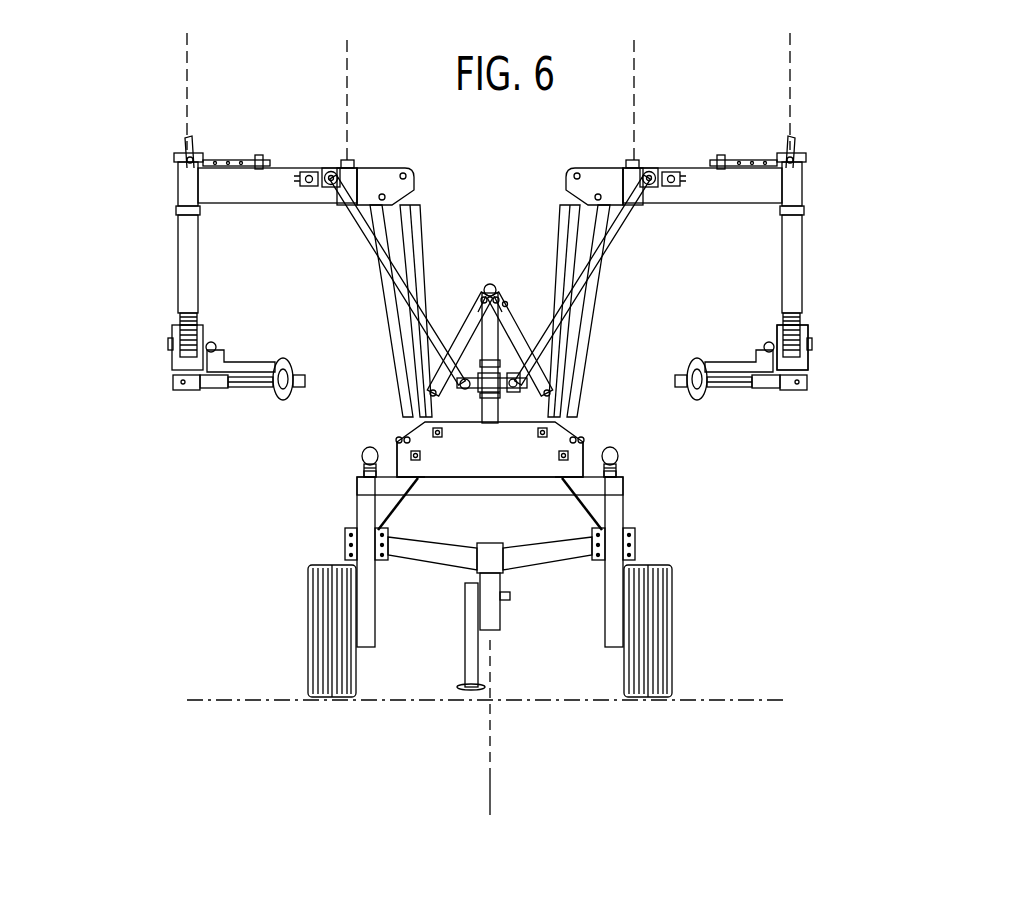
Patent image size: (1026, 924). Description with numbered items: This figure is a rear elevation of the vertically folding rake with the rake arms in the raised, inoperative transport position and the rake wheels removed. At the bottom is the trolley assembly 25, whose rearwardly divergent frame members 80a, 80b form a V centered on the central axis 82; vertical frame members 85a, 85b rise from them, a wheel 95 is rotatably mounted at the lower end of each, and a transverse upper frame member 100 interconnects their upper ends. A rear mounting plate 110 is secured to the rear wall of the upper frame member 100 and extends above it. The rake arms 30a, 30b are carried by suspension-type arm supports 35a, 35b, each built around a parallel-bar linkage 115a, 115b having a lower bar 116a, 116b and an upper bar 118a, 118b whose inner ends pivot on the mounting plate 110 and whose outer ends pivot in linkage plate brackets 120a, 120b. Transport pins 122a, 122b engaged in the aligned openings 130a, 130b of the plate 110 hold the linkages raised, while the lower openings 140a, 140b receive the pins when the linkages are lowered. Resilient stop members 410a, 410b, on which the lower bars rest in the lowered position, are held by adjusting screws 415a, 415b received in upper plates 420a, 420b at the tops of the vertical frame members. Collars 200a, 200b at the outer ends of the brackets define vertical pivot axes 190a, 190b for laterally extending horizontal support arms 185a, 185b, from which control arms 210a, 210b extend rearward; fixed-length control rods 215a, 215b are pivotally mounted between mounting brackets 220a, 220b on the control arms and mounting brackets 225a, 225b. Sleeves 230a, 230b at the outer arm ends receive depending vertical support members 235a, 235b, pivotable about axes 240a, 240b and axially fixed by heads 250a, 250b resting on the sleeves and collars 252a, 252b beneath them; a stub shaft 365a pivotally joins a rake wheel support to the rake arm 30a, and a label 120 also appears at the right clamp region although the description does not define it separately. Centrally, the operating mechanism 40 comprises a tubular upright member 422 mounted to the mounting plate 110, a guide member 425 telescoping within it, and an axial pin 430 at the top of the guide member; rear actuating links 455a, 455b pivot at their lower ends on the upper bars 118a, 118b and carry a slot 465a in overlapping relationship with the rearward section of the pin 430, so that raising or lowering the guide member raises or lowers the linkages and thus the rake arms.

The trolley assembly 25 is at (657, 533).
The rake arm 30a is at (177, 363).
The rake arm 30b is at (807, 372).
The suspension-type arm support 35a is at (235, 112).
The suspension-type arm support 35b is at (740, 72).
The operating mechanism 40 is at (449, 336).
The rearwardly divergent trolley frame member 80a is at (418, 552).
The rearwardly divergent trolley frame member 80b is at (557, 555).
The central axis 82 is at (490, 796).
The vertical frame member 85a is at (380, 632).
The vertical frame member 85b is at (602, 620).
The wheel 95 is at (675, 673).
The transverse upper frame member 100 is at (482, 496).
The rear mounting plate 110 is at (584, 448).
The linkage 115a is at (374, 268).
The linkage 115b is at (610, 268).
The lower bar 116a is at (384, 290).
The lower bar 116b is at (594, 312).
The upper bar 118a is at (428, 268).
The upper bar 118b is at (558, 234).
The clamp body 120 is at (810, 333).
The linkage plate bracket 120a is at (366, 168).
The linkage plate bracket 120b is at (610, 165).
The transport pin 122a is at (427, 478).
The transport pin 122b is at (584, 384).
The opening 130a is at (399, 437).
The opening 130b is at (582, 430).
The opening 140a is at (357, 507).
The opening 140b is at (582, 478).
The horizontal support arm 185a is at (286, 166).
The horizontal support arm 185b is at (700, 163).
The vertical pivot axis 190a is at (349, 94).
The vertical pivot axis 190b is at (635, 83).
The collar 200a is at (363, 183).
The collar 200b is at (620, 178).
The control arm 210a is at (305, 185).
The control arm 210b is at (667, 188).
The control rod 215a is at (392, 240).
The control rod 215b is at (590, 215).
The mounting bracket 220a is at (338, 165).
The mounting bracket 220b is at (641, 180).
The mounting bracket 225a is at (441, 438).
The mounting bracket 225b is at (541, 439).
The vertical collar or sleeve 230a is at (177, 190).
The vertical collar or sleeve 230b is at (805, 187).
The vertical support member 235a is at (177, 238).
The vertical support member 235b is at (803, 267).
The vertical pivot axis 240a is at (186, 36).
The vertical pivot axis 240b is at (793, 63).
The head 250a is at (185, 153).
The head 250b is at (795, 150).
The collar 252a is at (178, 212).
The collar 252b is at (805, 213).
The stub shaft 365a is at (185, 392).
The resilient stop member 410a is at (357, 468).
The resilient stop member 410b is at (618, 455).
The adjusting screw 415a is at (358, 455).
The adjusting screw 415b is at (622, 463).
The upper plate 420a is at (357, 473).
The upper plate 420b is at (620, 472).
The tubular upright member 422 is at (501, 393).
The guide member 425 is at (462, 325).
The axial pin 430 is at (492, 285).
The rear actuating link 455a is at (485, 294).
The rear actuating link 455b is at (503, 296).
The slot 465a is at (507, 303).